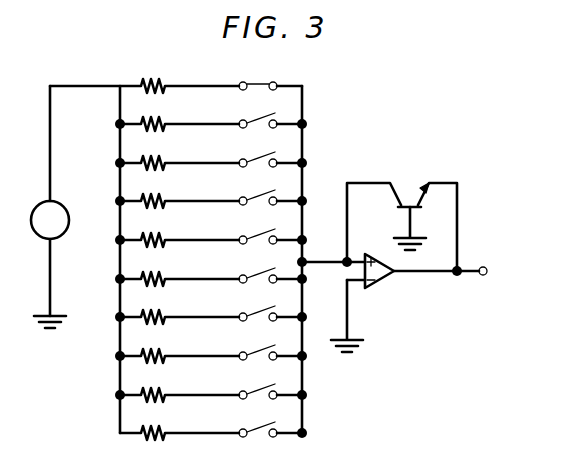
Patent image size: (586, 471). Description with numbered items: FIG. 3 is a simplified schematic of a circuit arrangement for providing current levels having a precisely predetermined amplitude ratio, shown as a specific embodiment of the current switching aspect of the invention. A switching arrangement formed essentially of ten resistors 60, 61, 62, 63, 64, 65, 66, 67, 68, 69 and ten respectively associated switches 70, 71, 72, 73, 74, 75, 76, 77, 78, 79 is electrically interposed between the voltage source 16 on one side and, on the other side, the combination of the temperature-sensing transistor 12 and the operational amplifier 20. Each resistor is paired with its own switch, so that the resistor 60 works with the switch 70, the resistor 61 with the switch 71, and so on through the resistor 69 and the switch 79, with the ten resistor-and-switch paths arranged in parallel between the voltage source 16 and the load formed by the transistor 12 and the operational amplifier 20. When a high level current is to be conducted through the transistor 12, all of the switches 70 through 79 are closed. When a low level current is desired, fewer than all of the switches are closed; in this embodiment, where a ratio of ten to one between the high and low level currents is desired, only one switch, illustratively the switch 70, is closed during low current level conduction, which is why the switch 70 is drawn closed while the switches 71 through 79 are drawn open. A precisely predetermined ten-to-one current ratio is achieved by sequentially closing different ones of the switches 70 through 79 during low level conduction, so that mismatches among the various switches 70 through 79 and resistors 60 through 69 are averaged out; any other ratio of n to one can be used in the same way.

The transistor 12 is at (408, 202).
The voltage source 16 is at (53, 201).
The operational amplifier 20 is at (376, 283).
The resistor 60 is at (148, 79).
The resistor 61 is at (148, 117).
The resistor 62 is at (148, 156).
The resistor 63 is at (148, 194).
The resistor 64 is at (148, 233).
The resistor 65 is at (148, 272).
The resistor 66 is at (148, 310).
The resistor 67 is at (148, 349).
The resistor 68 is at (148, 388).
The resistor 69 is at (148, 426).
The switch 70 is at (257, 82).
The switch 71 is at (256, 117).
The switch 72 is at (256, 156).
The switch 73 is at (256, 194).
The switch 74 is at (256, 233).
The switch 75 is at (256, 272).
The switch 76 is at (256, 310).
The switch 77 is at (256, 349).
The switch 78 is at (256, 388).
The switch 79 is at (256, 426).